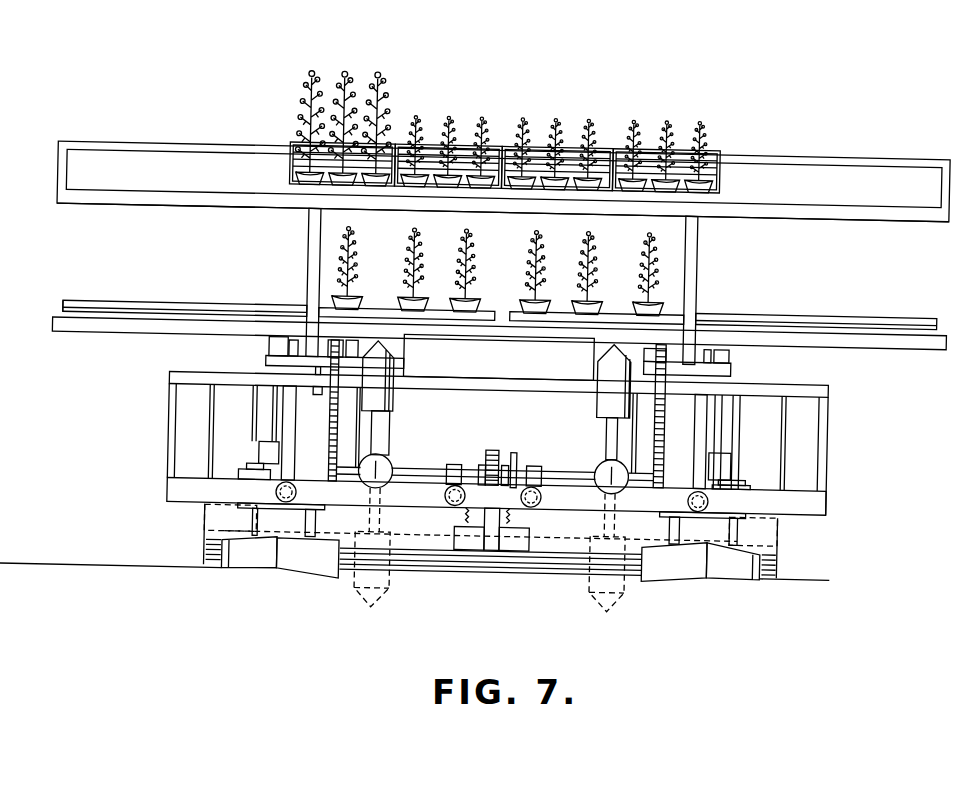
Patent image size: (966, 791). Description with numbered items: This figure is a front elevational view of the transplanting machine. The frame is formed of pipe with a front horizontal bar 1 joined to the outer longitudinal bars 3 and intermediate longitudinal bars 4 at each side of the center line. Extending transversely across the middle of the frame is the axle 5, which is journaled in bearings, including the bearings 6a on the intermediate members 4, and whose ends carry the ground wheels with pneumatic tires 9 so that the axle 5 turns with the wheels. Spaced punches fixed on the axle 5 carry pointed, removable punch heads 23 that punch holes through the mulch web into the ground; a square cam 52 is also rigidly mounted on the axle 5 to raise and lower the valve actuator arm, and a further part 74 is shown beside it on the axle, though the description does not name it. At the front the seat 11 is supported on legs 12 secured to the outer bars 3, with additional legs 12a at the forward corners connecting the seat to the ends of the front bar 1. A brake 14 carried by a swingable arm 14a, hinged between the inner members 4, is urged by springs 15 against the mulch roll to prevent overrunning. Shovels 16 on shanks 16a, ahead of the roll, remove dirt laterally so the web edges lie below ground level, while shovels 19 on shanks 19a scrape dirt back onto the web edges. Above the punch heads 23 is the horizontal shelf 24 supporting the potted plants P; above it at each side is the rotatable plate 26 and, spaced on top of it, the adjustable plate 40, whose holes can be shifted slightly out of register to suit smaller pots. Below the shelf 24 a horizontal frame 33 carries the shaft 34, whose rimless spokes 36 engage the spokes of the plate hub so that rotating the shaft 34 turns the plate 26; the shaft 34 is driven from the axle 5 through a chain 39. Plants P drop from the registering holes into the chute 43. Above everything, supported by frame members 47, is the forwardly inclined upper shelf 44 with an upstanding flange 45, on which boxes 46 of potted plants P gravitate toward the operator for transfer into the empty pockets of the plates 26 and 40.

The front horizontal bar 1 is at (803, 498).
The outer longitudinal bar 3 is at (288, 496).
The intermediate longitudinal bar 4 is at (447, 496).
The axle 5 is at (420, 470).
The bearing 6a is at (457, 465).
The pneumatic tire 9 is at (225, 428).
The seat 11 is at (488, 378).
The leg 12 is at (296, 422).
The additional leg 12a is at (169, 430).
The brake 14 is at (532, 541).
The swingable arm 14a is at (492, 555).
The spring 15 is at (470, 516).
The shovel 16 is at (318, 558).
The shank 16a is at (314, 523).
The shovel 19 is at (247, 550).
The shank 19a is at (252, 522).
The punch head 23 is at (401, 367).
The shelf 24 is at (149, 340).
The rotatable plate 26 is at (61, 313).
The horizontal frame 33 is at (268, 364).
The horizontal shaft 34 is at (712, 318).
The spoke 36 is at (320, 378).
The chain 39 is at (330, 437).
The adjustable plate 40 is at (178, 309).
The chute 43 is at (402, 420).
The upper shelf 44 is at (802, 197).
The upstanding flange 45 is at (853, 151).
The box 46 is at (285, 177).
The frame member 47 is at (305, 246).
The square cam 52 is at (516, 452).
The gear 74 is at (494, 450).
The potted plant P is at (470, 190).